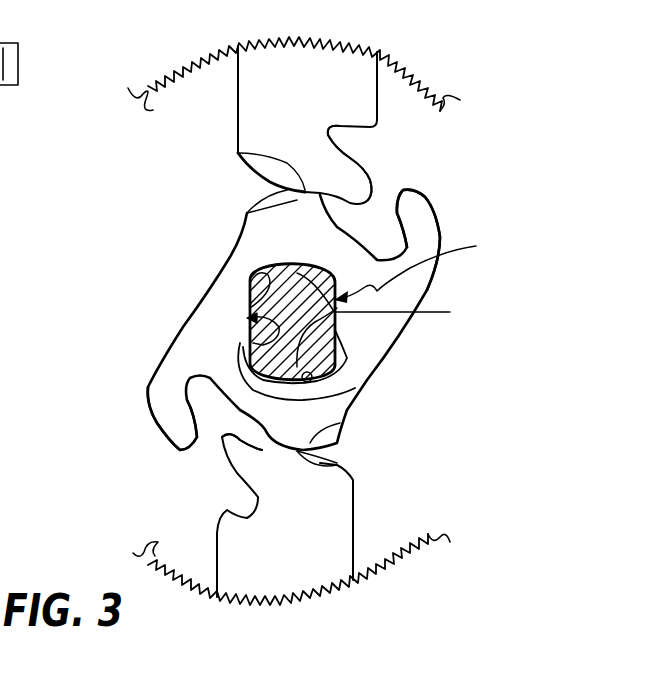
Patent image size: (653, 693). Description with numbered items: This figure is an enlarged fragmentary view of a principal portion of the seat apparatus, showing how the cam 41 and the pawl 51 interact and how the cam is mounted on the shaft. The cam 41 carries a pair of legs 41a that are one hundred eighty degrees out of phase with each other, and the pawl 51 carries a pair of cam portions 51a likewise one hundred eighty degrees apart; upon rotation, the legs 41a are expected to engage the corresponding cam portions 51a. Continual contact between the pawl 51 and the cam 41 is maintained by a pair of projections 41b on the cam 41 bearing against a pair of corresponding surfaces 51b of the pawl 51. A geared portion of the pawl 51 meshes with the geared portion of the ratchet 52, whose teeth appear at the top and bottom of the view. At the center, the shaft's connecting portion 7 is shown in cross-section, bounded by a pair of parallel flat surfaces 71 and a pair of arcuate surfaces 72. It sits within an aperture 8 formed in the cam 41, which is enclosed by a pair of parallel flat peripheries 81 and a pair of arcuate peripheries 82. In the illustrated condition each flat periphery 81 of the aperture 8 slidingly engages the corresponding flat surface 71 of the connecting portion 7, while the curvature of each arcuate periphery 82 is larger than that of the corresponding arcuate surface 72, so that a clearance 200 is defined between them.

The ratchet 52 is at (364, 47).
The pawl 51 is at (247, 107).
The cam portions 51a is at (368, 178).
The corresponding surfaces 51b is at (238, 153).
The cam 41 is at (340, 323).
The legs 41a is at (417, 203).
The projections 41b is at (247, 213).
The parallel flat surfaces 71 is at (350, 357).
The arcuate surfaces 72 is at (410, 314).
The aperture 8 is at (250, 340).
The parallel flat peripheries 81 is at (298, 275).
The arcuate peripheries 82 is at (247, 297).
The connecting portion 7 is at (413, 267).
The clearance 200 is at (320, 268).